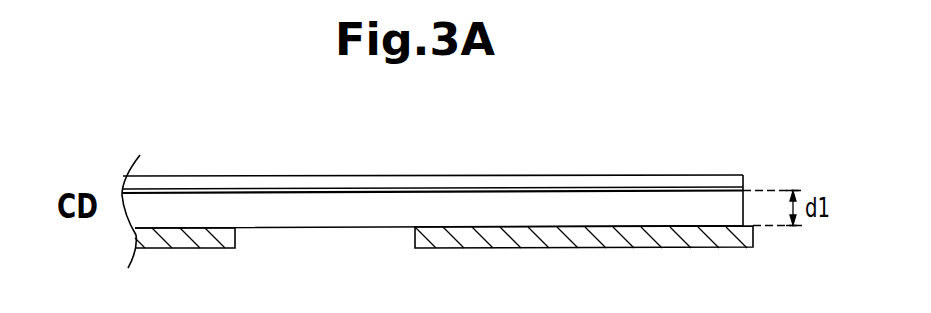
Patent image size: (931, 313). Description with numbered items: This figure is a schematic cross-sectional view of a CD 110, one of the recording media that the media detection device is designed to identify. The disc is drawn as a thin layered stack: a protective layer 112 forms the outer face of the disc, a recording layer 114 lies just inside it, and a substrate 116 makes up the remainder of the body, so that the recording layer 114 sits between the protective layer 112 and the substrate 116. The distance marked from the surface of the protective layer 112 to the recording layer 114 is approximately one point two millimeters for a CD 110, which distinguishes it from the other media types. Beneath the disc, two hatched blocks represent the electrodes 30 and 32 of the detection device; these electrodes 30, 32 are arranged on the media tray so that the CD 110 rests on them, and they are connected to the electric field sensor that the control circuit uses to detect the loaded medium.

The CD 110 is at (447, 176).
The substrate 116 is at (518, 183).
The recording layer 114 is at (598, 191).
The protective layer 112 is at (686, 203).
The electrode 32 is at (210, 248).
The electrode 30 is at (618, 248).